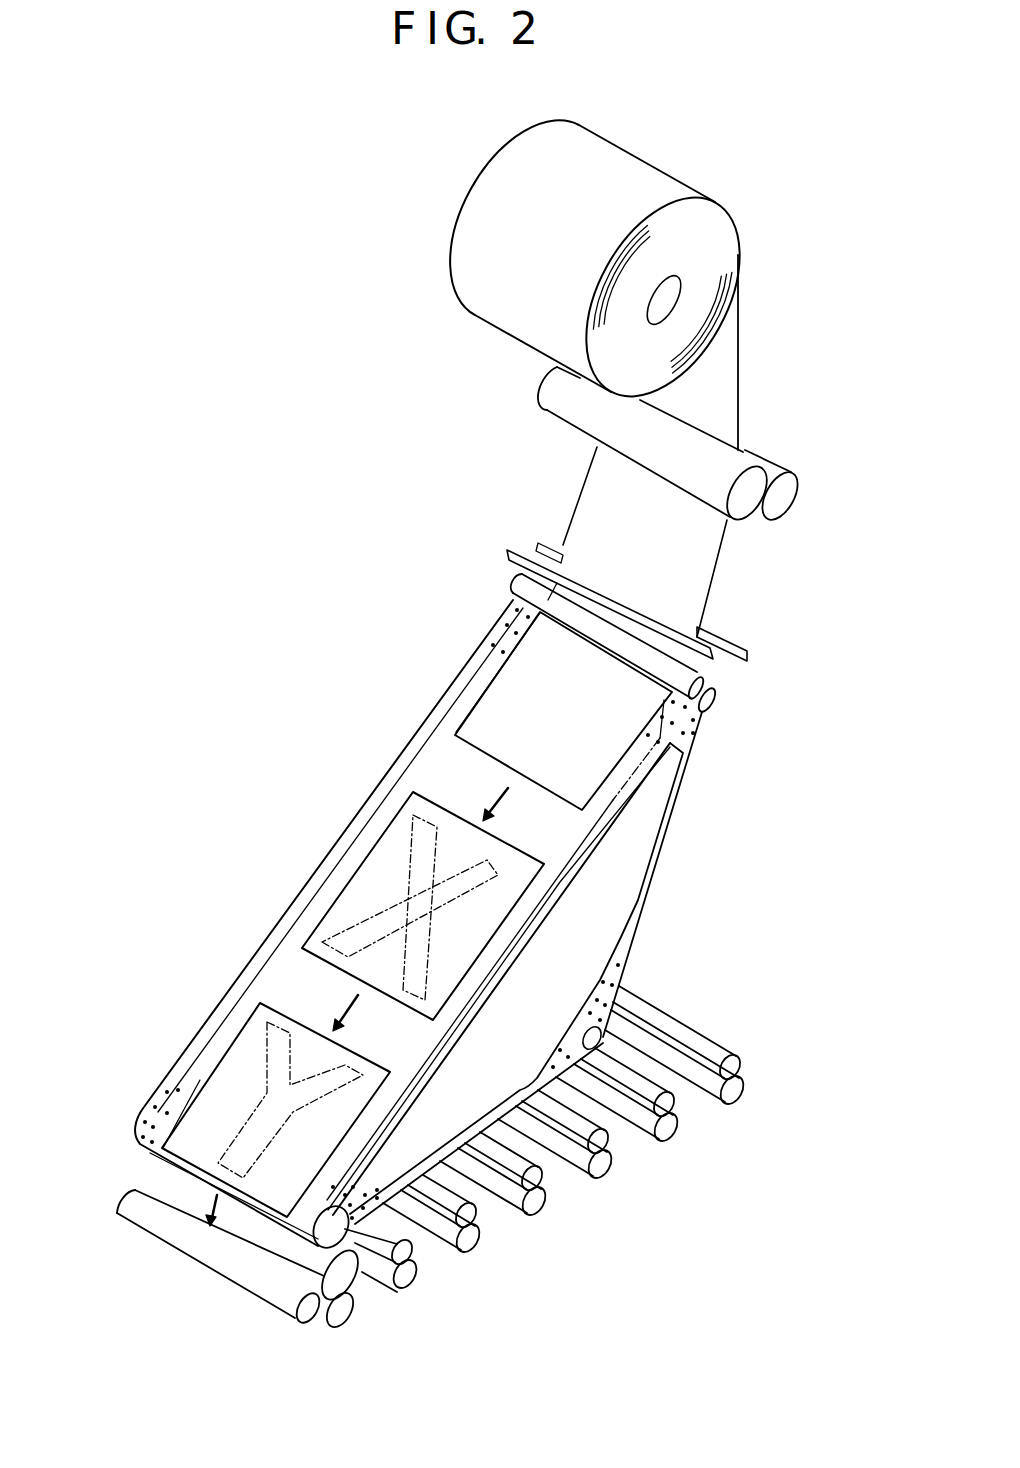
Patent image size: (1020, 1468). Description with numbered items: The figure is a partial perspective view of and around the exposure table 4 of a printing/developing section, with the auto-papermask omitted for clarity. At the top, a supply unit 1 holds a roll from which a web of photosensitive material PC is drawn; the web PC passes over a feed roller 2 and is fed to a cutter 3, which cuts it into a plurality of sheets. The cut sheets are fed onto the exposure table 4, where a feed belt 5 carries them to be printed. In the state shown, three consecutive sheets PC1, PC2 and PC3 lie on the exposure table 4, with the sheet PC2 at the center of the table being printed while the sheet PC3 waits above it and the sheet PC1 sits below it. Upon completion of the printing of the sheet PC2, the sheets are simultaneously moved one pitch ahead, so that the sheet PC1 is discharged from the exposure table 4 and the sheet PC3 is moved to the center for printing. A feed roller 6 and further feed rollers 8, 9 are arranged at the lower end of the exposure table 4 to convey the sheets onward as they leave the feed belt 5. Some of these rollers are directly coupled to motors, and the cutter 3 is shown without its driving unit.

The supply unit 1 is at (485, 222).
The web of photosensitive material PC is at (727, 383).
The feed roller 2 is at (745, 498).
The cutter 3 is at (733, 633).
The sheet PC3 is at (497, 697).
The sheet PC2 is at (358, 886).
The sheet PC1 is at (217, 1077).
The feed belt 5 is at (693, 768).
The exposure table 4 is at (637, 855).
The feed rollers 9 is at (418, 1273).
The feed roller 6 is at (406, 1283).
The feed rollers 8 is at (337, 1272).